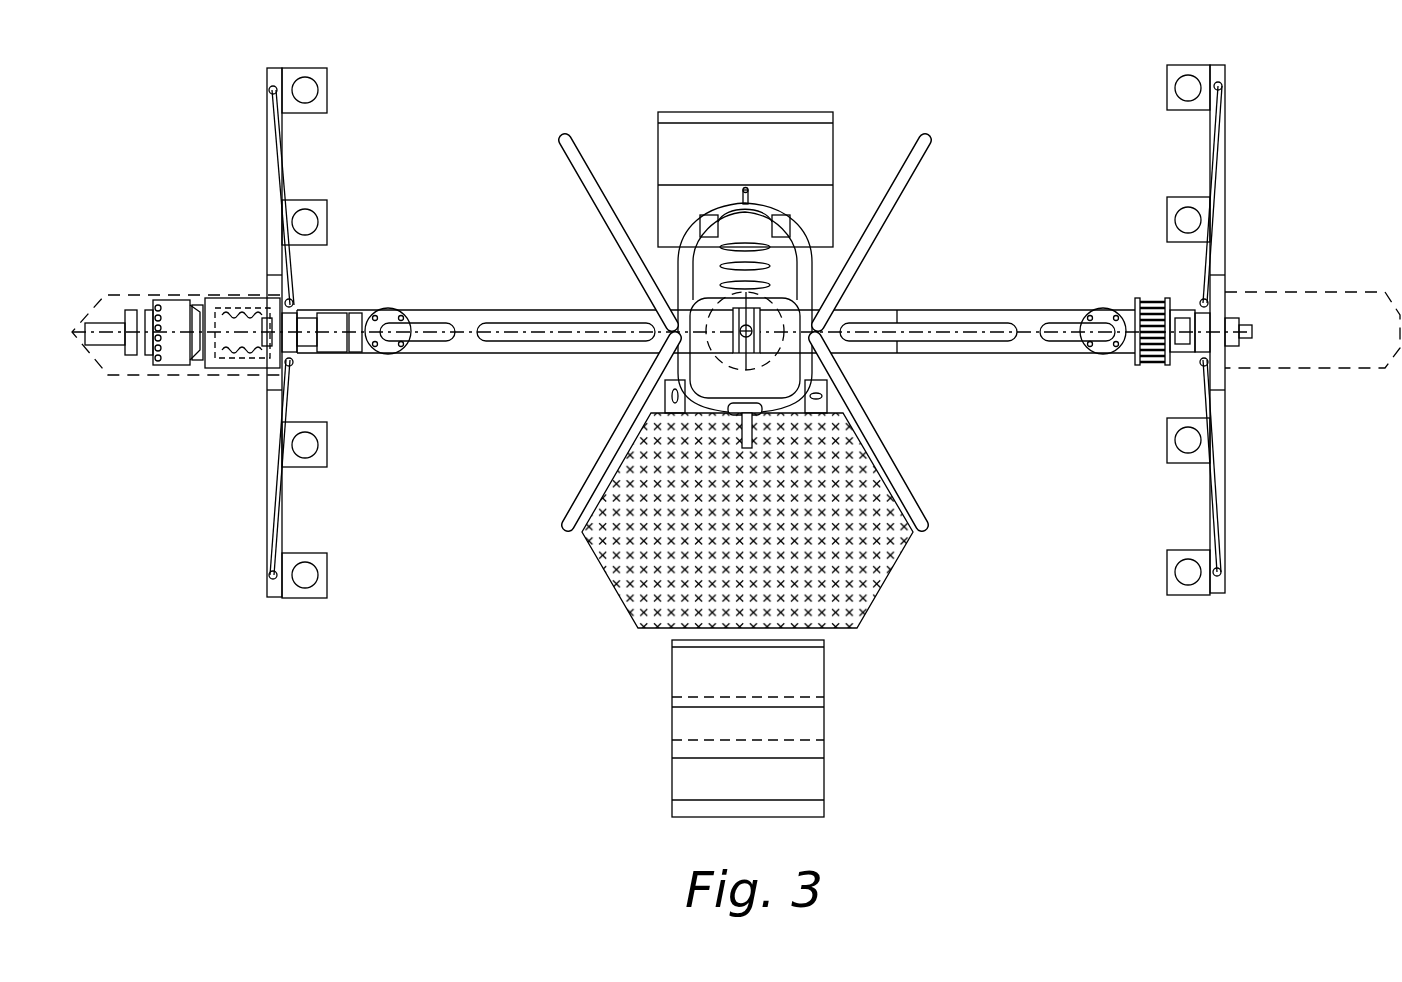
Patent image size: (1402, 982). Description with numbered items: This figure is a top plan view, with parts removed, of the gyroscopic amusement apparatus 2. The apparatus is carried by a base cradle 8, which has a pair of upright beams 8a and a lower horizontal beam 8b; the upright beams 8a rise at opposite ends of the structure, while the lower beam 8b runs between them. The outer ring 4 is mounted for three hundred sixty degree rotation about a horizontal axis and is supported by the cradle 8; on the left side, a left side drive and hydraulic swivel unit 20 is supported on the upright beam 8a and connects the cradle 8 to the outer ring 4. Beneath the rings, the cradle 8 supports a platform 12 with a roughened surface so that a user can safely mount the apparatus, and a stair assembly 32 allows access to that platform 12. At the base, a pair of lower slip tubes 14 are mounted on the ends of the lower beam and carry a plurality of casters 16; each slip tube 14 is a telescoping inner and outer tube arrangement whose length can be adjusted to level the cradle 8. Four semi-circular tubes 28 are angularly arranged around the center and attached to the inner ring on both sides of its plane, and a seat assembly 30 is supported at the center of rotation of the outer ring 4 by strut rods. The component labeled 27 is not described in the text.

The gyroscopic amusement apparatus 2 is at (875, 118).
The outer ring 4 is at (430, 325).
The base cradle 8 is at (485, 305).
The upright beams 8a is at (935, 312).
The lower horizontal beam 8b is at (275, 370).
The platform 12 is at (885, 578).
The lower slip tubes 14 is at (1218, 188).
The casters 16 is at (305, 92).
The left side drive and hydraulic swivel unit 20 is at (215, 300).
The spring 27 is at (1155, 360).
The semi-circular tubes 28 is at (583, 180).
The seat assembly 30 is at (710, 270).
The stair assembly 32 is at (812, 724).